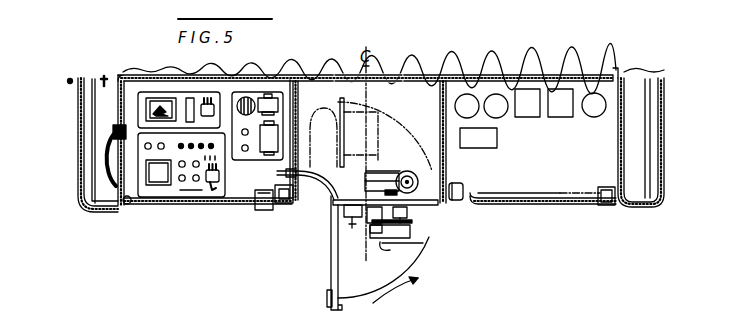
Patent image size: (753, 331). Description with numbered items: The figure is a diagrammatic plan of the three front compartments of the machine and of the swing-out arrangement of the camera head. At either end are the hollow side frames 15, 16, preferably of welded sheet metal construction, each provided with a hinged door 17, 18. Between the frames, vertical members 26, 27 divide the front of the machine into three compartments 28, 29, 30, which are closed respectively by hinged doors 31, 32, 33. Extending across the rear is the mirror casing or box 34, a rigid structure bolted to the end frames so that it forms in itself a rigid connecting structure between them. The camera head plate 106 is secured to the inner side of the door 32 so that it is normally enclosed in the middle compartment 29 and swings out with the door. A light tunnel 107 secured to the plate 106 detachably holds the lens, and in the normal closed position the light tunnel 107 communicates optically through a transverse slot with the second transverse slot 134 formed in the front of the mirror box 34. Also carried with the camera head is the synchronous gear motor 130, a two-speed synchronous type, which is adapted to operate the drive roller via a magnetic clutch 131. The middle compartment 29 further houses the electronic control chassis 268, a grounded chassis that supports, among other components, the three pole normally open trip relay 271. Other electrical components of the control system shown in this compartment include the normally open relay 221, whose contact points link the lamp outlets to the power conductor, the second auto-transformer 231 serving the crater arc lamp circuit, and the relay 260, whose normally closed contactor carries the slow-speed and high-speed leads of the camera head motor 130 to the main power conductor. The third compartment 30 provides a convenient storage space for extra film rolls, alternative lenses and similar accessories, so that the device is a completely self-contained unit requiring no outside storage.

The hollow side frame 15 is at (622, 207).
The hollow side frame 16 is at (105, 213).
The hinged door 17 is at (664, 97).
The hinged door 18 is at (77, 98).
The vertical member 26 is at (291, 203).
The vertical member 27 is at (457, 205).
The compartment 28 is at (243, 188).
The middle compartment 29 is at (413, 90).
The compartment 30 is at (552, 182).
The hinged door 31 is at (212, 144).
The hinged door 32 is at (330, 243).
The hinged door 33 is at (575, 203).
The mirror casing or box 34 is at (540, 75).
The camera head plate 106 is at (430, 207).
The light tunnel 107 is at (396, 113).
The synchronous gear motor 130 is at (322, 118).
The magnetic clutch 131 is at (402, 167).
The transverse slot 134 is at (419, 56).
The normally open relay 221 is at (160, 107).
The auto-transformer 231 is at (272, 100).
The relay 260 is at (205, 98).
The electronic control chassis 268 is at (148, 198).
The three pole normally open trip relay 271 is at (221, 192).